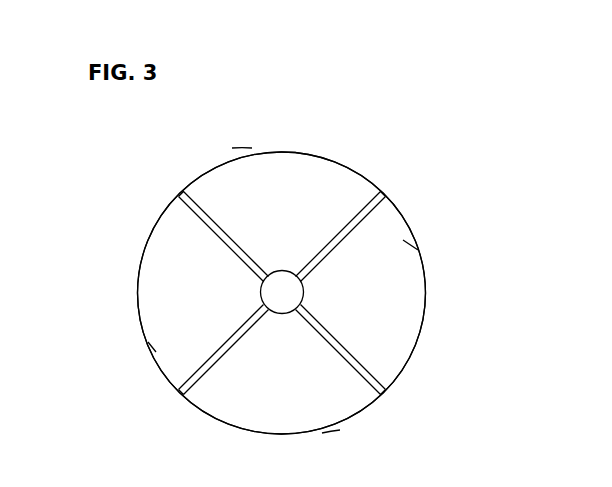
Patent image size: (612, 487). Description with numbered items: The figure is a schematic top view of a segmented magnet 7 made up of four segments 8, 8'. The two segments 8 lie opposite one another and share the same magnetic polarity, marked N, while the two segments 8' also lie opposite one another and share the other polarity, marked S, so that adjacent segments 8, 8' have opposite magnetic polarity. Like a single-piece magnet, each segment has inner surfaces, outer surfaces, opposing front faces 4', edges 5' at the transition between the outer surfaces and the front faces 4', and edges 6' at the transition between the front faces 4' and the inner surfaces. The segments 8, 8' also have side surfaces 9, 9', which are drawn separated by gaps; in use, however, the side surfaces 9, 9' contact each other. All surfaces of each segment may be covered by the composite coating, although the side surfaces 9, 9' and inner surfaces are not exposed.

The segmented magnet 7 is at (412, 130).
The front faces 4' is at (285, 288).
The edges at the transition between the outer surfaces and the front surfaces 5' is at (263, 299).
The edges at the transition between the front surfaces and the inner surfaces 6' is at (276, 319).
The segments 8 is at (285, 295).
The segments 8' is at (280, 293).
The side surfaces 9 is at (261, 290).
The side surfaces 9' is at (217, 374).